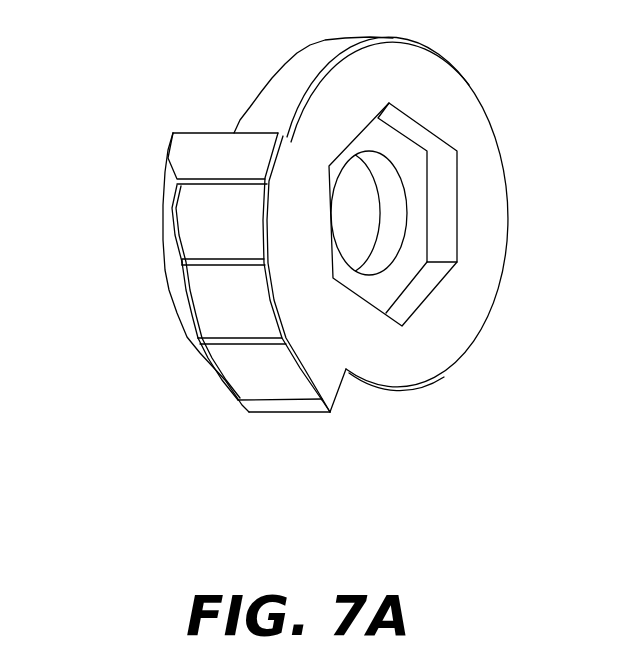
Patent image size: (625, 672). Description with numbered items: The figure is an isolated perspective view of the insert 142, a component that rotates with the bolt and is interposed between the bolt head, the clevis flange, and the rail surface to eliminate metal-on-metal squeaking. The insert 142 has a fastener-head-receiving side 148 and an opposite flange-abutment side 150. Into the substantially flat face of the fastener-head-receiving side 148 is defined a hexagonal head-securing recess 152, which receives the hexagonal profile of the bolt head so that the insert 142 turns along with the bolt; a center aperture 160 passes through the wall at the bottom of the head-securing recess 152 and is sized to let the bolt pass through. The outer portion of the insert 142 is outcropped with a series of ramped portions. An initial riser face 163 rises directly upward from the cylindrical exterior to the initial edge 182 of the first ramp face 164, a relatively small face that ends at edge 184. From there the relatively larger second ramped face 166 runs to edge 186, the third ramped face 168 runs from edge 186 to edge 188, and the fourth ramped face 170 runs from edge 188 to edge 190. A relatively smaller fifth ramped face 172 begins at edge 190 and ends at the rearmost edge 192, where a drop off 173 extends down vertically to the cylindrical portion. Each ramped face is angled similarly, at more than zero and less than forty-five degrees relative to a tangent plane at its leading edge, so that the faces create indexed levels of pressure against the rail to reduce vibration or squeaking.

The insert 142 is at (118, 383).
The fastener-head-receiving side 148 is at (424, 214).
The flange-abutment side 150 is at (258, 77).
The head-securing recess 152 is at (437, 219).
The center aperture 160 is at (453, 206).
The initial riser face 163 is at (288, 138).
The first ramp face 164 is at (215, 260).
The second ramped face 166 is at (175, 224).
The third ramped face 168 is at (193, 306).
The fourth ramped face 170 is at (196, 378).
The fifth ramped face 172 is at (289, 442).
The drop off 173 is at (370, 401).
The initial edge 182 is at (217, 101).
The edge 184 is at (126, 231).
The edge 186 is at (160, 240).
The edge 188 is at (178, 333).
The edge 190 is at (257, 440).
The rearmost edge 192 is at (345, 450).